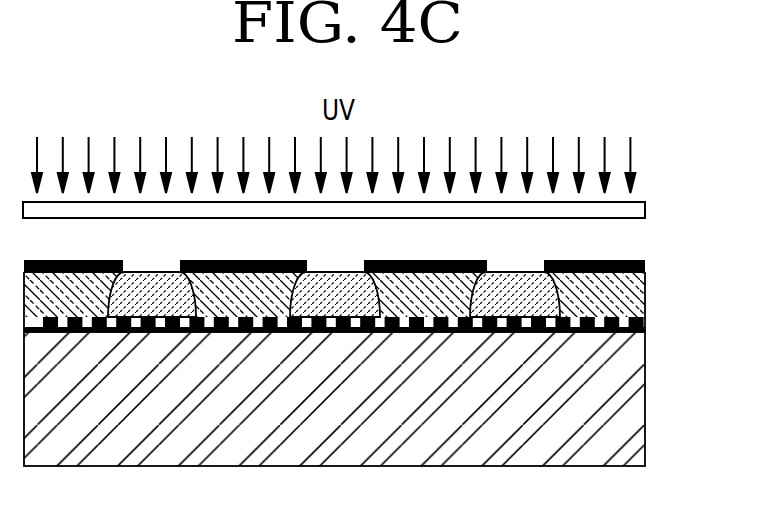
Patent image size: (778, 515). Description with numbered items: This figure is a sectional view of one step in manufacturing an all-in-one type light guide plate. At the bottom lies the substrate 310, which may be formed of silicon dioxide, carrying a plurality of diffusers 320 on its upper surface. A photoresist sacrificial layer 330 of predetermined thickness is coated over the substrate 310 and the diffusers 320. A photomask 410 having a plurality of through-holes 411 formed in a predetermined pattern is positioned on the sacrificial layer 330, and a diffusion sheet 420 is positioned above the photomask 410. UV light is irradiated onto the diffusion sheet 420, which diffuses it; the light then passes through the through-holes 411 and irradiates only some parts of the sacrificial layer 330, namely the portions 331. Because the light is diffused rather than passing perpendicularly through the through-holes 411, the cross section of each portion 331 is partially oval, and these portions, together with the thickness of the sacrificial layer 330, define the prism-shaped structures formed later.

The substrate 310 is at (640, 400).
The diffusers 320 is at (640, 328).
The sacrificial layer 330 is at (640, 296).
The portions 331 is at (172, 307).
The photomask 410 is at (645, 268).
The through-holes 411 is at (158, 270).
The diffusion sheet 420 is at (645, 209).